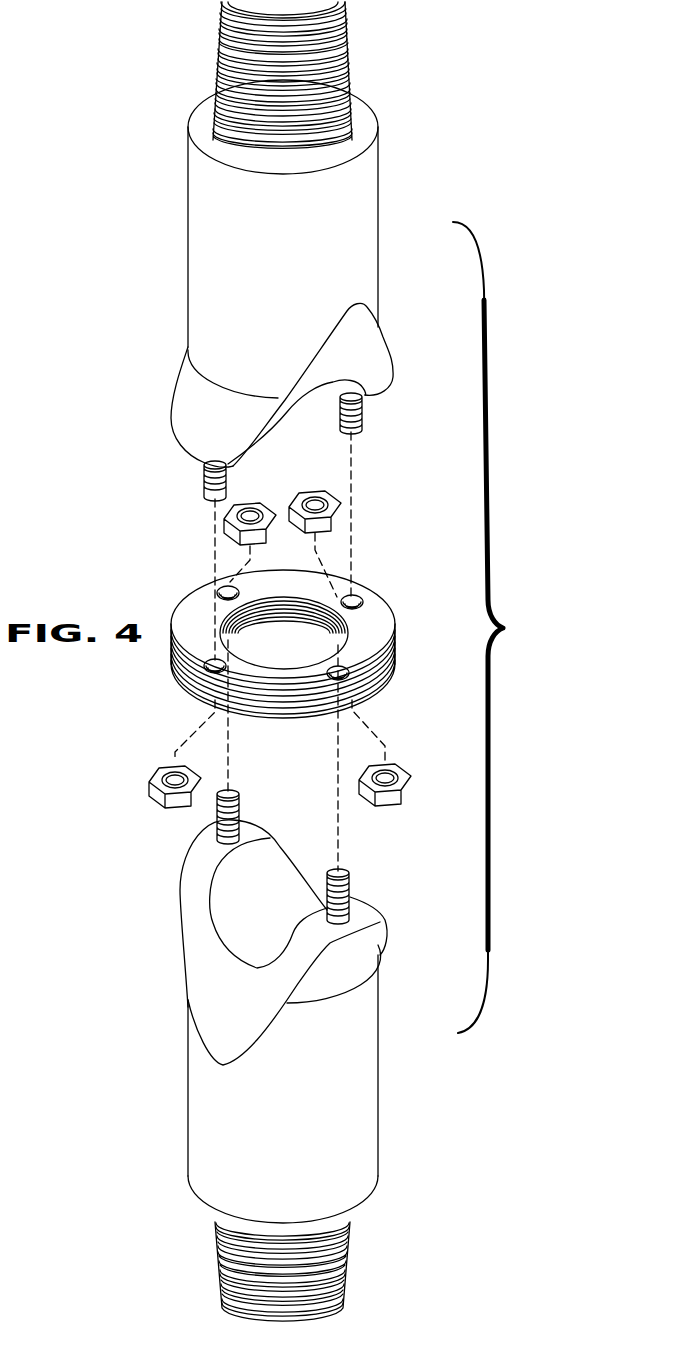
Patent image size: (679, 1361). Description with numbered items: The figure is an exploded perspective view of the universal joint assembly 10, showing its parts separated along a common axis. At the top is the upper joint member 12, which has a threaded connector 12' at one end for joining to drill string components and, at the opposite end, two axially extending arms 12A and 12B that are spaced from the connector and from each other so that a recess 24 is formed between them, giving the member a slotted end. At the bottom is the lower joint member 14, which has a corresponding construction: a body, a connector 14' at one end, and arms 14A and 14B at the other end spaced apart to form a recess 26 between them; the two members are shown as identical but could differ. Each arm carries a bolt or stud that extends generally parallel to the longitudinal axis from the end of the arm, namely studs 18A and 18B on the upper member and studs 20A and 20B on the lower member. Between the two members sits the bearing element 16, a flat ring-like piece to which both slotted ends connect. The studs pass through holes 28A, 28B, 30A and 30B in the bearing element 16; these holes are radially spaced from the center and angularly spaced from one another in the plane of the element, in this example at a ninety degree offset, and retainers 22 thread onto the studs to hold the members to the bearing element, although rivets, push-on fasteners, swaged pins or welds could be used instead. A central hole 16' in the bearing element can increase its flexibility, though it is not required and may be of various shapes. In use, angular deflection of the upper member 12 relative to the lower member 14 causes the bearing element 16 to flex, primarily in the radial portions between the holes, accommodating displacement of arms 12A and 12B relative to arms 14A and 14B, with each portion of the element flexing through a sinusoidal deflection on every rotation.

The universal joint assembly 10 is at (146, 110).
The upper joint member 12 is at (252, 239).
The connector 12' is at (317, 75).
The arm 12A is at (393, 353).
The arm 12B is at (190, 428).
The lower joint member 14 is at (316, 1084).
The connector 14' is at (315, 1271).
The arm 14A is at (363, 952).
The arm 14B is at (180, 889).
The bearing element 16 is at (315, 644).
The hole 16' is at (284, 633).
The stud 18A is at (364, 415).
The stud 18B is at (203, 482).
The stud 20A is at (352, 885).
The stud 20B is at (240, 800).
The retainer 22 is at (222, 520).
The recess 24 is at (312, 409).
The recess 26 is at (284, 898).
The hole 28A is at (181, 668).
The hole 28B is at (365, 597).
The hole 30A is at (226, 588).
The hole 30B is at (350, 676).